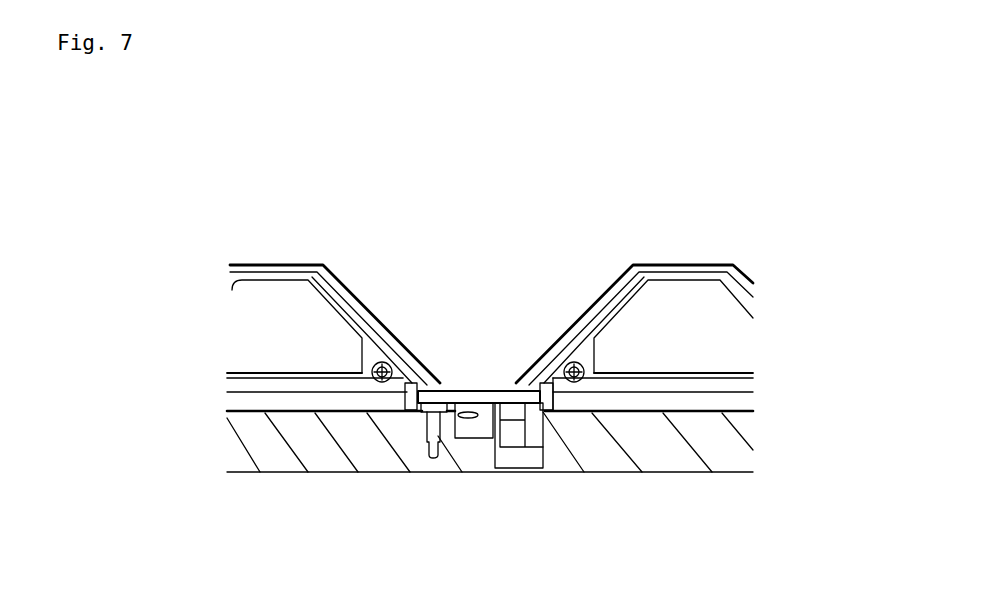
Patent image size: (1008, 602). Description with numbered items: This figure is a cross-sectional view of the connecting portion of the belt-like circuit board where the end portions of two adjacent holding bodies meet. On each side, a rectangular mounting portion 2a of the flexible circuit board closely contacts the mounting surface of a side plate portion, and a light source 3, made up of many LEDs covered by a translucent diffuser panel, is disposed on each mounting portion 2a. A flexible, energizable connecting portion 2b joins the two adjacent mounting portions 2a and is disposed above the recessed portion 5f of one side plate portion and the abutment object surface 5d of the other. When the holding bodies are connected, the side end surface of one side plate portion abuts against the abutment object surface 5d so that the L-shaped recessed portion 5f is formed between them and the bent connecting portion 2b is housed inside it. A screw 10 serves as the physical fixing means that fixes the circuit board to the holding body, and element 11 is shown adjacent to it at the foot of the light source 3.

The mounting portion 2a is at (303, 413).
The connecting portion 2b is at (483, 391).
The light source 3 is at (290, 385).
The abutment object surface 5d is at (471, 430).
The recessed portion 5f is at (517, 455).
The screw 10 is at (429, 457).
The screw 11 is at (385, 360).